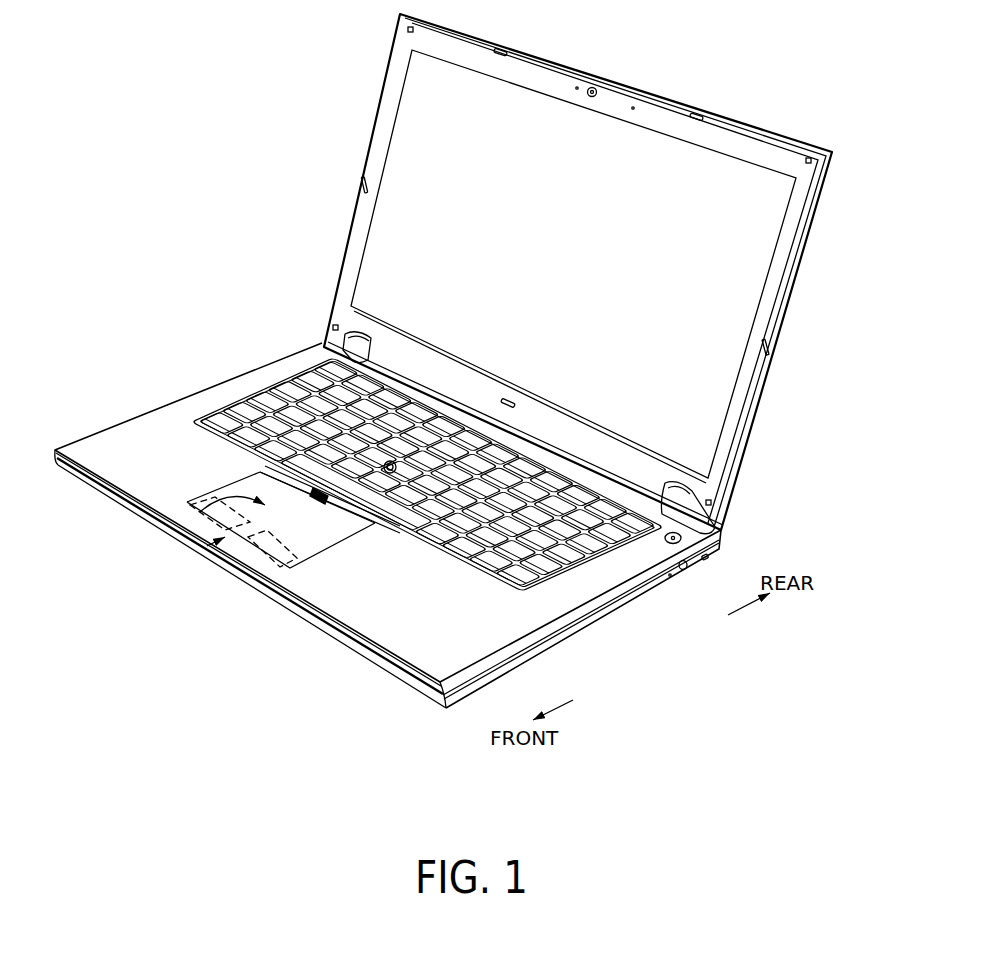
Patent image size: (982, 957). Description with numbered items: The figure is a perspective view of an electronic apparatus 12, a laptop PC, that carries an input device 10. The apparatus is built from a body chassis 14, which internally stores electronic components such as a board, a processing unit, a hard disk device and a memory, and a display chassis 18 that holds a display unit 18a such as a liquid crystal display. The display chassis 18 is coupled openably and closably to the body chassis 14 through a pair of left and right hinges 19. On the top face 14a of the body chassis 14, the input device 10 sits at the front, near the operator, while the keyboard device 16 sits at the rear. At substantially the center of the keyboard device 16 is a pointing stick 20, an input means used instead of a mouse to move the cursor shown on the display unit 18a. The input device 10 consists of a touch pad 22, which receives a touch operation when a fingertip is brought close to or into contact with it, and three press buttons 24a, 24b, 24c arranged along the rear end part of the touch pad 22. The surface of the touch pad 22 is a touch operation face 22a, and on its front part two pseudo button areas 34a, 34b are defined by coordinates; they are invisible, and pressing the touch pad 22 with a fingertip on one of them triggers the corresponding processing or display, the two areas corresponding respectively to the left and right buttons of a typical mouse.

The input device 10 is at (227, 535).
The electronic apparatus 12 is at (206, 79).
The body chassis 14 is at (108, 460).
The top face 14a is at (558, 602).
The keyboard device 16 is at (277, 402).
The display chassis 18 is at (806, 264).
The display unit 18a is at (733, 308).
The hinges 19 is at (357, 350).
The pointing stick 20 is at (392, 462).
The touch pad 22 is at (180, 528).
The touch operation face 22a is at (350, 547).
The press button 24a is at (270, 472).
The press button 24b is at (315, 507).
The press button 24c is at (337, 533).
The pseudo button area 34a is at (182, 543).
The pseudo button area 34b is at (240, 587).